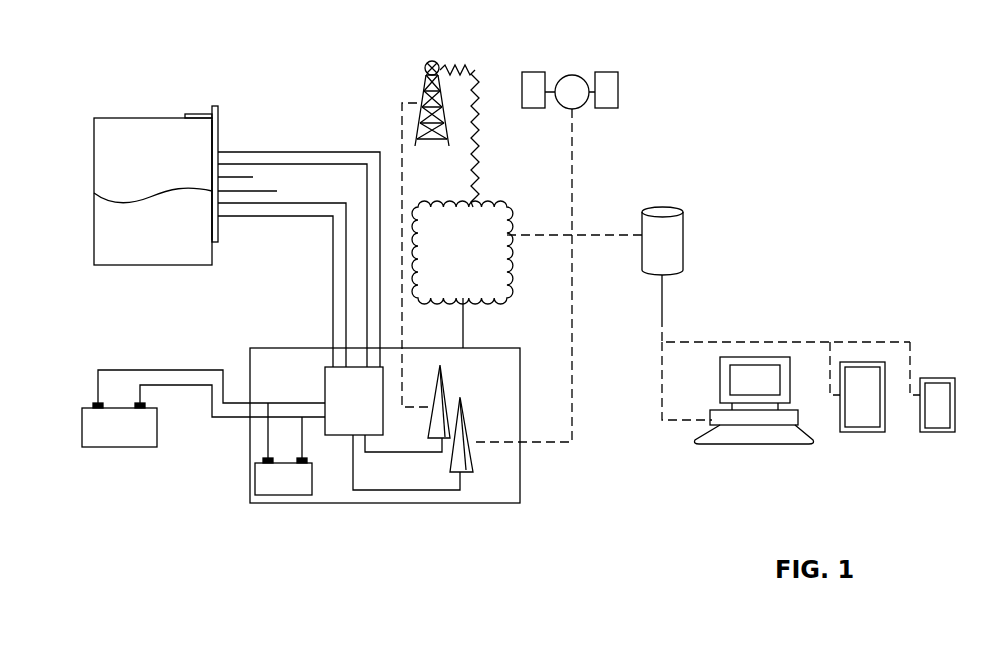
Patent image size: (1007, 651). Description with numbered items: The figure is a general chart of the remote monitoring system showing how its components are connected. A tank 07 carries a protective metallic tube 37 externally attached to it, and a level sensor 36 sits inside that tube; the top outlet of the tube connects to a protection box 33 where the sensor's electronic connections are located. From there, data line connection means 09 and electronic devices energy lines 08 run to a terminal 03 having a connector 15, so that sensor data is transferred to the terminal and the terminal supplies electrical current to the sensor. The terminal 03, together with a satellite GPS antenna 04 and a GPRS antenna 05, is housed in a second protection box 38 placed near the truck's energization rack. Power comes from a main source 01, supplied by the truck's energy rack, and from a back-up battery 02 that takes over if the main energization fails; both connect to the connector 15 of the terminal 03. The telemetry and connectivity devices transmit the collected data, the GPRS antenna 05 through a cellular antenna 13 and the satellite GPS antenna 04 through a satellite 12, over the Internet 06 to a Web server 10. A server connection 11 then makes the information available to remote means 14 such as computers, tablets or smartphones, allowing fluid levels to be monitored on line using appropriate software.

The main source 01 is at (120, 447).
The back-up battery 02 is at (293, 495).
The terminal 03 is at (325, 377).
The satellite GPS antenna 04 is at (465, 475).
The GPRS antenna 05 is at (443, 387).
The Internet 06 is at (457, 299).
The tank 07 is at (152, 265).
The electronic devices energy line 08 is at (275, 216).
The data line connection means 09 is at (275, 152).
The Web server 10 is at (647, 275).
The server connection 11 is at (662, 318).
The satellite 12 is at (572, 75).
The cellular antenna 13 is at (432, 61).
The remote means 14 is at (757, 444).
The connector 15 is at (392, 428).
The protection box 33 is at (215, 106).
The sensor 36 is at (256, 191).
The protective metallic tube 37 is at (244, 177).
The protection box 38 is at (377, 503).